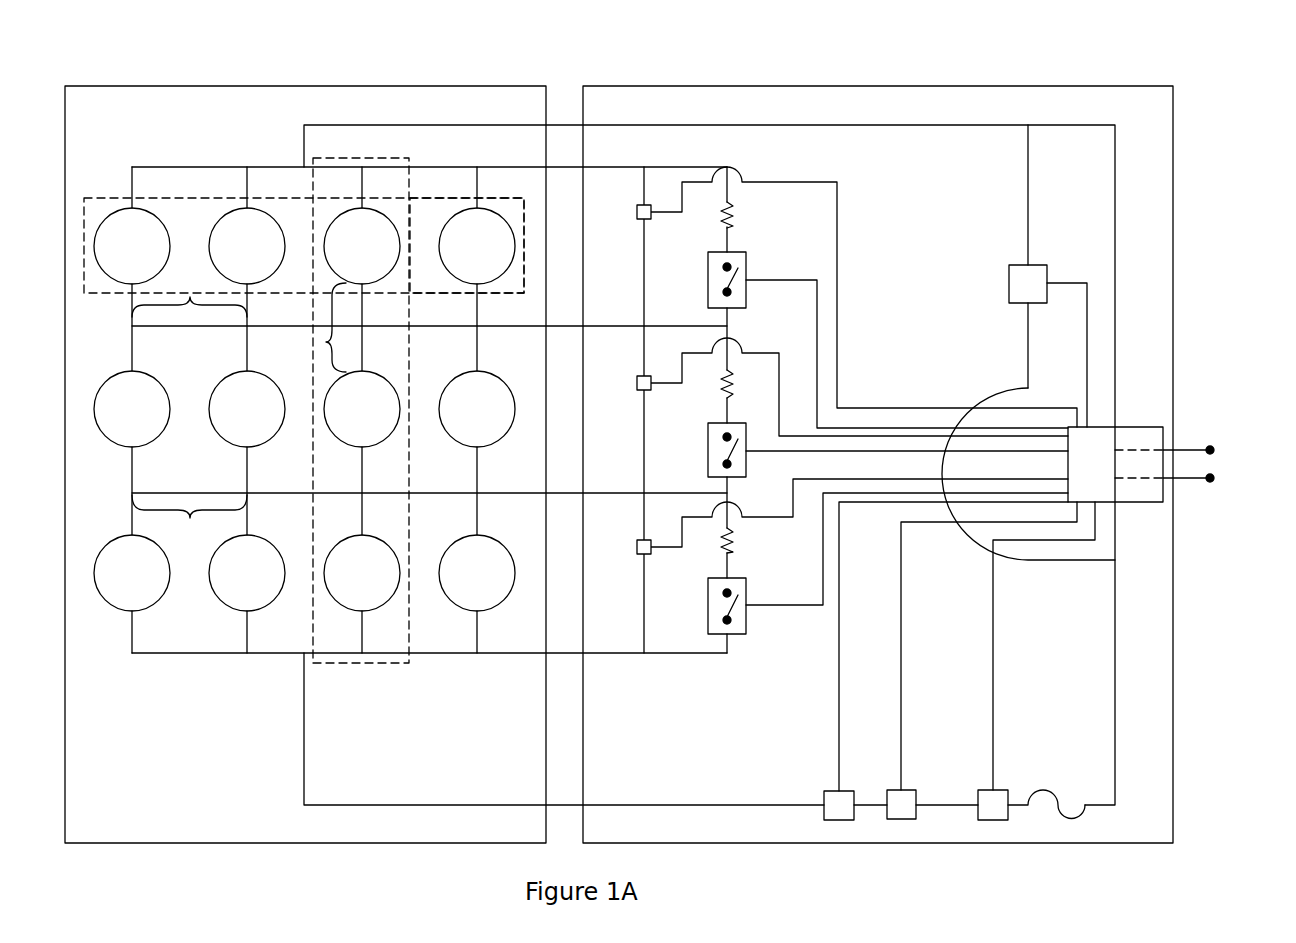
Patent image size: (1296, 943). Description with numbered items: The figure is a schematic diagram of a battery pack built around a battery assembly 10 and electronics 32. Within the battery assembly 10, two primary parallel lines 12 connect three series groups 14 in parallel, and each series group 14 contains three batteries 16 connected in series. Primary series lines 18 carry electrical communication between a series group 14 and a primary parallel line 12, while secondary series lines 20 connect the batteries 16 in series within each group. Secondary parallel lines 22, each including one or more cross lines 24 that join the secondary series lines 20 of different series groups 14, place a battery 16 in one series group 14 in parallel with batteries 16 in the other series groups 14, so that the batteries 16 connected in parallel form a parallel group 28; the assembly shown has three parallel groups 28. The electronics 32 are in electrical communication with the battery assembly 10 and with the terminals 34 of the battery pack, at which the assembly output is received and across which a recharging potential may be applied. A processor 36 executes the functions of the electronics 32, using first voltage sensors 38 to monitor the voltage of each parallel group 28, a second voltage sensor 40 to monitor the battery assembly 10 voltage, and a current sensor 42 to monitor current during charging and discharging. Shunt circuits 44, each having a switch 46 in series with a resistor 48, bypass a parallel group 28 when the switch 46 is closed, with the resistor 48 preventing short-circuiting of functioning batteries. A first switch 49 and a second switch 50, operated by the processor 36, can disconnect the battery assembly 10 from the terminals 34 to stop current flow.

The battery assembly 10 is at (247, 85).
The primary parallel line 12 is at (187, 165).
The series group 14 is at (362, 157).
The battery 16 is at (445, 268).
The primary series line 18 is at (247, 182).
The secondary series line 20 is at (324, 342).
The secondary parallel line 22 is at (187, 326).
The cross line 24 is at (304, 371).
The parallel group 28 is at (498, 198).
The electronics 32 is at (918, 85).
The terminal 34 is at (1218, 446).
The processor 36 is at (1138, 427).
The first voltage sensor 38 is at (636, 215).
The second voltage sensor 40 is at (1008, 282).
The current sensor 42 is at (1008, 790).
The shunt circuit 44 is at (741, 160).
The switch 46 is at (746, 253).
The resistor 48 is at (732, 220).
The first switch 49 is at (850, 790).
The second switch 50 is at (916, 790).